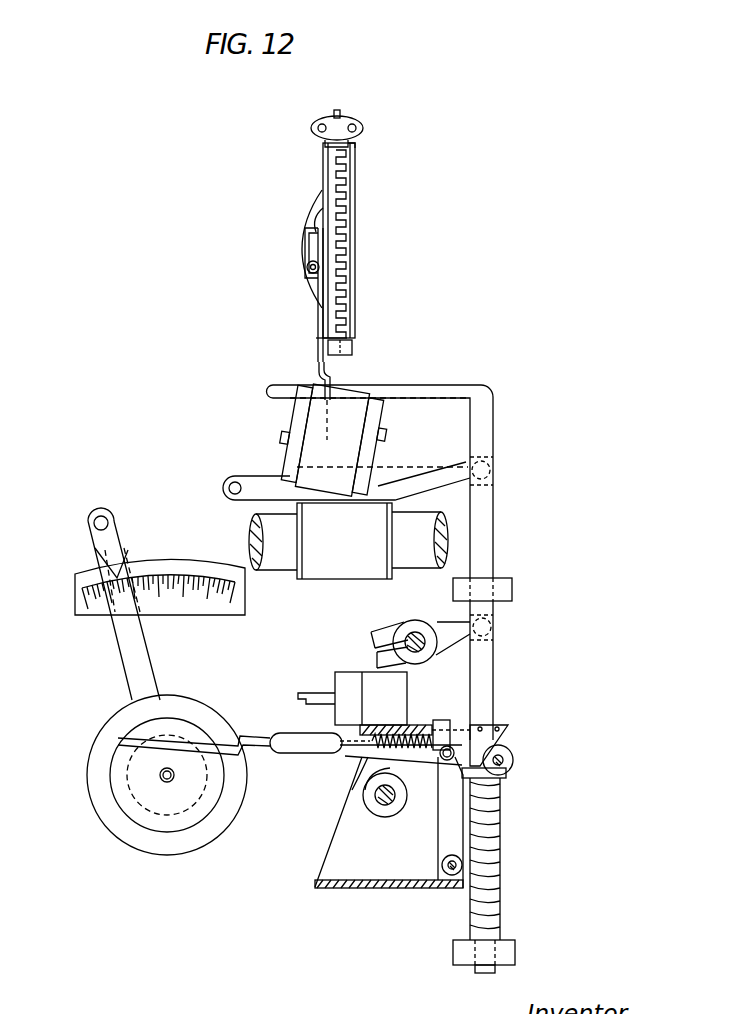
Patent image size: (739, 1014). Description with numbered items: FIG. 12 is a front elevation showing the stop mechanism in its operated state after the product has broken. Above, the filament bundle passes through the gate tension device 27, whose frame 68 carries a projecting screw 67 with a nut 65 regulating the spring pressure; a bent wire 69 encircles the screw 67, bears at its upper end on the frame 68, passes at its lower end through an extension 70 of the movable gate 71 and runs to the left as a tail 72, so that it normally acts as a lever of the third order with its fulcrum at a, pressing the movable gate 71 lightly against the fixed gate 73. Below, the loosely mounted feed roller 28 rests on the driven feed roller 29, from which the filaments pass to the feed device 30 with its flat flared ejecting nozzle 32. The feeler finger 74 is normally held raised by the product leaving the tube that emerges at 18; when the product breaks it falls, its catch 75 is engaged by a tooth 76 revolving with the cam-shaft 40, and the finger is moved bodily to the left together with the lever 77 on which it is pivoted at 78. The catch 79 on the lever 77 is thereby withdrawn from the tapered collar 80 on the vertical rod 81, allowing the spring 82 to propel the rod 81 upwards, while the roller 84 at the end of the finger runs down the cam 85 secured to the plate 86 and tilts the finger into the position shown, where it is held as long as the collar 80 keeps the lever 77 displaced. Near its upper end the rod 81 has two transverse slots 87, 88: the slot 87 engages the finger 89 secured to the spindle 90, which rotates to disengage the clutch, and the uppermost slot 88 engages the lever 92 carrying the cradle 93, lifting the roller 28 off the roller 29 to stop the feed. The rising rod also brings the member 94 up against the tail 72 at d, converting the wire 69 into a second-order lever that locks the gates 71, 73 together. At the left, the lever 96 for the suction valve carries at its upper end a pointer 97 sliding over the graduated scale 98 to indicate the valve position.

The tube exit 18 is at (162, 785).
The gate tension device 27 is at (346, 160).
The feed roller 28 is at (347, 410).
The feed roller 29 is at (348, 570).
The feed device 30 is at (371, 698).
The ejecting nozzle 32 is at (300, 692).
The cam-shaft 40 is at (378, 804).
The nut 65 is at (320, 283).
The screw 67 is at (307, 270).
The frame 68 is at (315, 208).
The wire 69 is at (318, 248).
The extension 70 is at (318, 338).
The movable gate 71 is at (355, 318).
The tail 72 is at (330, 382).
The fixed gate 73 is at (337, 290).
The feeler finger 74 is at (118, 740).
The catch 75 is at (362, 760).
The tooth 76 is at (387, 770).
The lever 77 is at (440, 784).
The pivot 78 is at (448, 735).
The catch 79 is at (452, 800).
The tapered collar 80 is at (505, 778).
The vertical rod 81 is at (482, 695).
The spring 82 is at (500, 868).
The roller 84 is at (514, 762).
The cam 85 is at (496, 722).
The plate 86 is at (412, 728).
The slot 87 is at (493, 632).
The slot 88 is at (493, 477).
The finger 89 is at (443, 634).
The spindle 90 is at (412, 638).
The lever 92 is at (420, 470).
The cradle 93 is at (280, 462).
The member 94 is at (450, 386).
The lever 96 is at (127, 668).
The pointer 97 is at (123, 562).
The graduated scale 98 is at (100, 607).
The fulcrum a is at (318, 225).
The effort point d is at (318, 388).